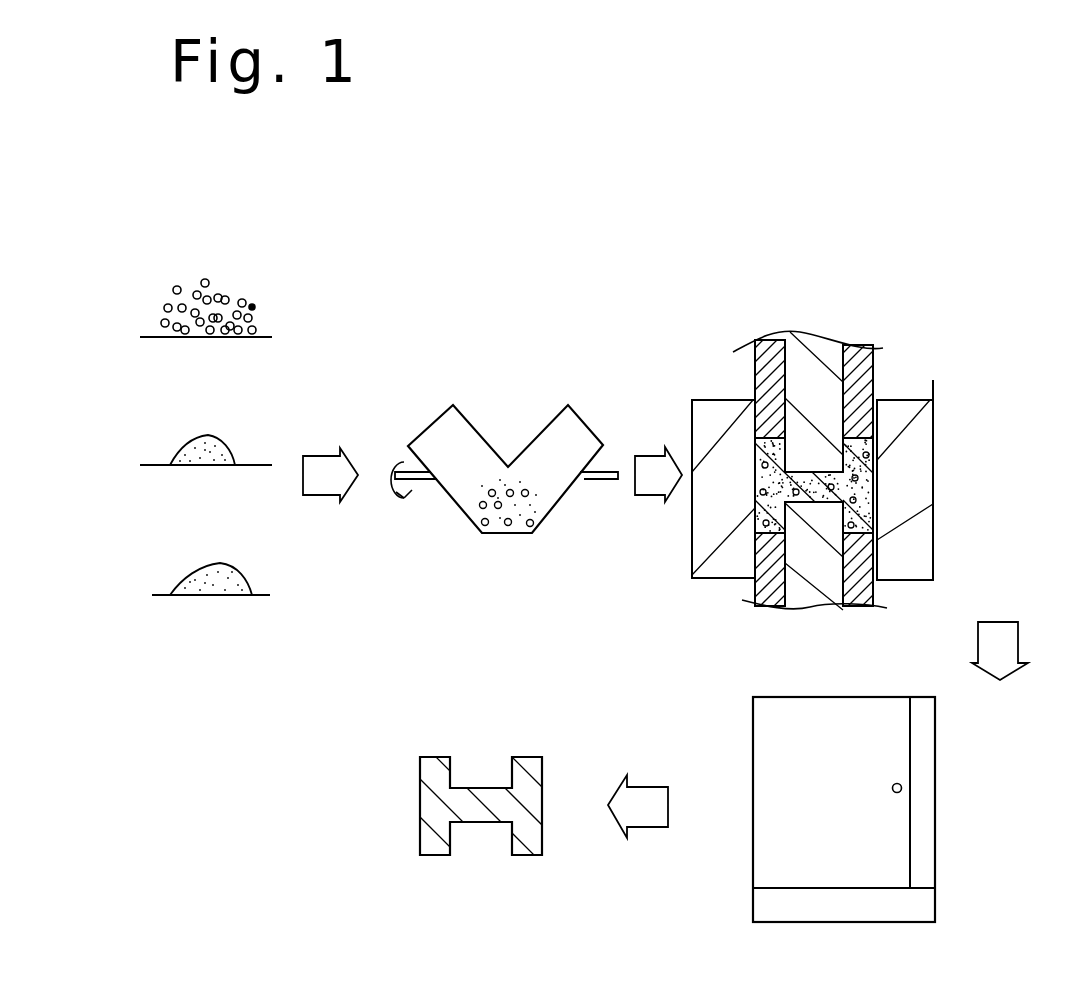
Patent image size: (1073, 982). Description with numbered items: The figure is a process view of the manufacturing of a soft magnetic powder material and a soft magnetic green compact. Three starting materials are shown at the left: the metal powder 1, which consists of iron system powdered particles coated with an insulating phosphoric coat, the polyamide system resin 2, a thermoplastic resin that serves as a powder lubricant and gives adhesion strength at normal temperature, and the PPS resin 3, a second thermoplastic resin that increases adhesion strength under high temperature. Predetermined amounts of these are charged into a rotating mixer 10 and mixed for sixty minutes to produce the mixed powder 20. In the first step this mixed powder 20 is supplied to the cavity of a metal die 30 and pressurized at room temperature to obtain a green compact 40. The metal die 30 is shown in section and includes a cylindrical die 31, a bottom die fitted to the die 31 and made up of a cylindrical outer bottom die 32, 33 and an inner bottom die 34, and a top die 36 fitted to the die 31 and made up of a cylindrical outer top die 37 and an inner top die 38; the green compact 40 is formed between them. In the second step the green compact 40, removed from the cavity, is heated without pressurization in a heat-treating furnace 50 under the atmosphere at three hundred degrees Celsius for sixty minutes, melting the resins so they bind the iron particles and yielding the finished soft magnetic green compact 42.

The metal powder 1 is at (248, 290).
The polyamide system resin 2 is at (228, 443).
The PPS resin 3 is at (242, 567).
The mixer 10 is at (582, 435).
The mixed powder 20 is at (522, 533).
The metal die 30 is at (875, 466).
The die 31 is at (925, 437).
The outer bottom die 32 is at (868, 597).
The outer bottom die 33 is at (768, 590).
The inner bottom die 34 is at (808, 597).
The top die 36 is at (853, 348).
The outer top die 37 is at (765, 355).
The inner top die 38 is at (810, 372).
The green compact 40 is at (863, 483).
The soft magnetic green compact 42 is at (537, 762).
The heat-treating furnace 50 is at (890, 762).